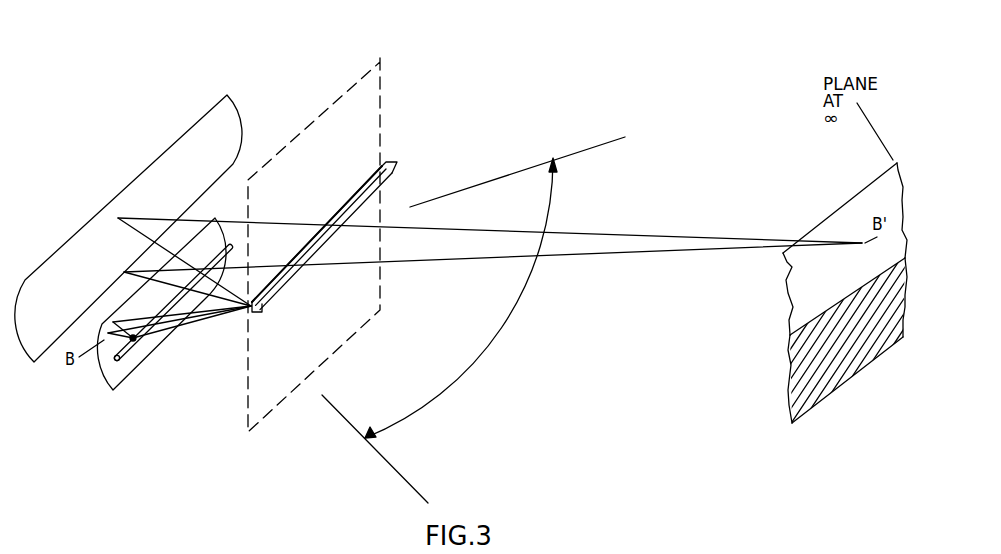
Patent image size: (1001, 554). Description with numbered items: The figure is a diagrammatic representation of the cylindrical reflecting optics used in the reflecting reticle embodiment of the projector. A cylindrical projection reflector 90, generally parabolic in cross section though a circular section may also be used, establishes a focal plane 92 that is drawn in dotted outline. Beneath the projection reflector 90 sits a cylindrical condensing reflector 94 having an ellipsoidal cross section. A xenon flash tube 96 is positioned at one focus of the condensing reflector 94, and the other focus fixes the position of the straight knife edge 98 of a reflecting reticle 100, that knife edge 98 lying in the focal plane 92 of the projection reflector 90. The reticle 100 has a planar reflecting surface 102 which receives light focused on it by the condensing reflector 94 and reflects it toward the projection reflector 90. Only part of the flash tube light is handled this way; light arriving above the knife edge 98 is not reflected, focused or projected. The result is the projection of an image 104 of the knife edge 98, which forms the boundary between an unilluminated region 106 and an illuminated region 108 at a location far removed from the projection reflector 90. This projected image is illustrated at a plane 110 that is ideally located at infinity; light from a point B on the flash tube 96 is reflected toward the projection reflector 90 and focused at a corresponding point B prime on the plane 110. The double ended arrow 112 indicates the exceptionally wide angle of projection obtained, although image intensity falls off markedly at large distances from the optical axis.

The cylindrical projection reflector 90 is at (227, 113).
The focal plane 92 is at (385, 78).
The cylindrical condensing reflector 94 is at (102, 380).
The xenon flash tube 96 is at (148, 335).
The knife edge 98 is at (360, 187).
The reflecting reticle 100 is at (285, 289).
The planar reflecting surface 102 is at (248, 316).
The image of knife edge 104 is at (786, 337).
The unilluminated region 106 is at (873, 343).
The illuminated region 108 is at (808, 291).
The plane 110 is at (807, 407).
The double ended arrow 112 is at (488, 340).